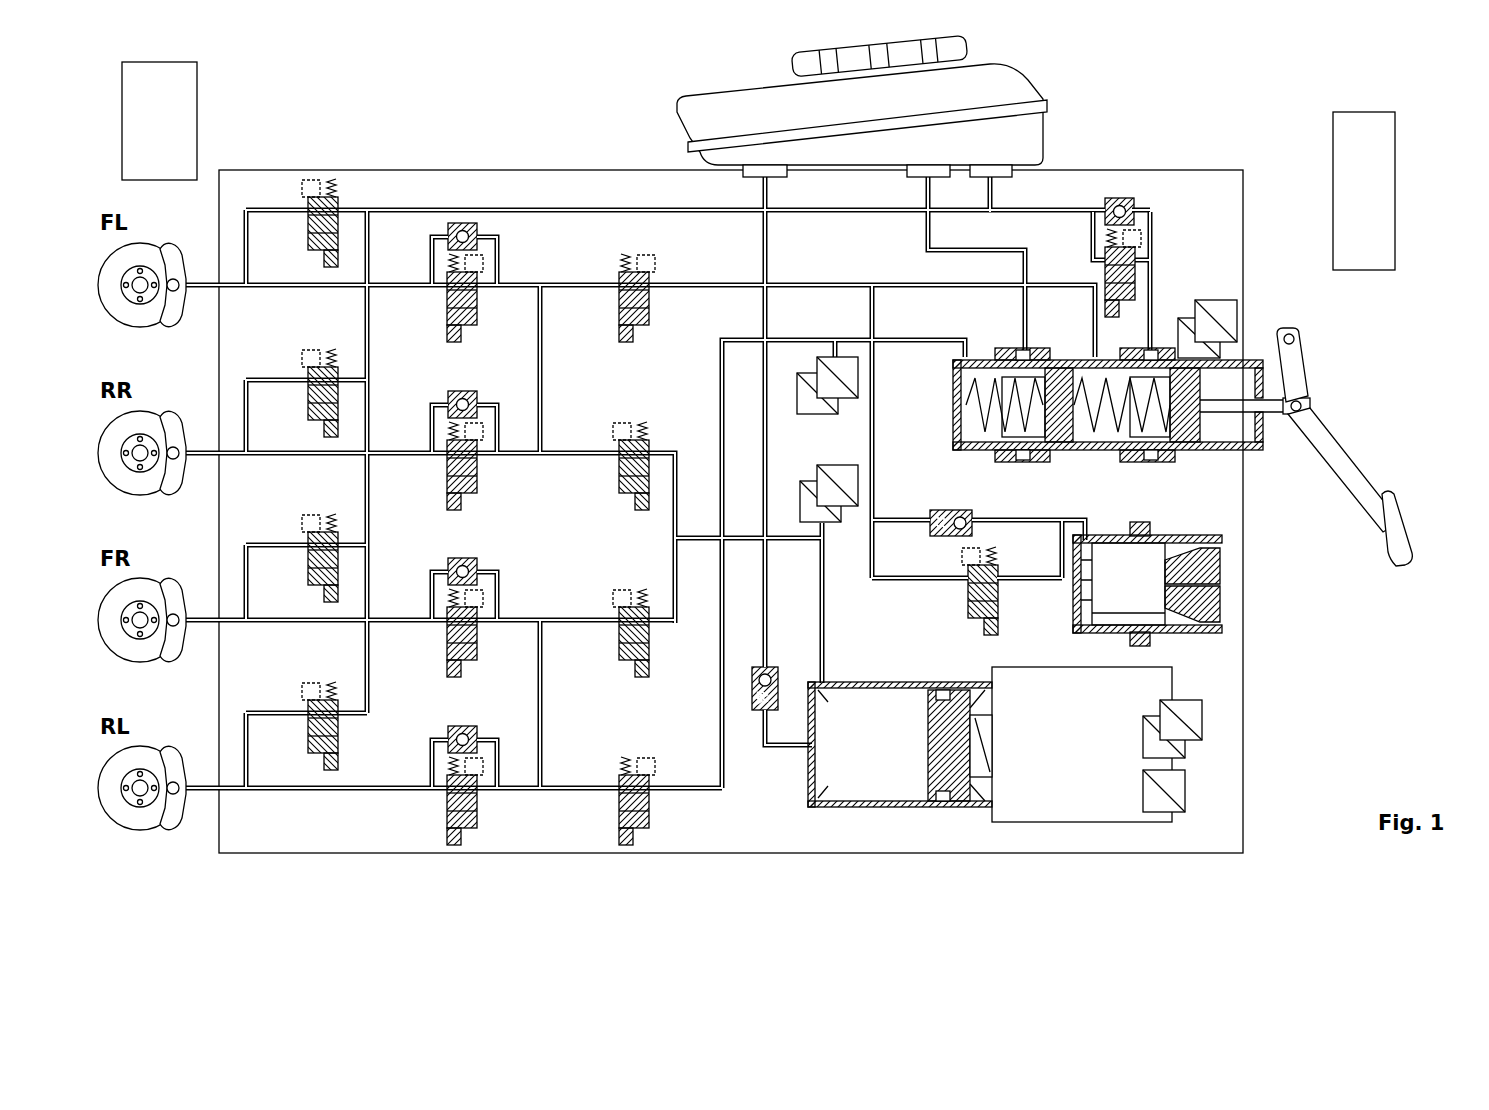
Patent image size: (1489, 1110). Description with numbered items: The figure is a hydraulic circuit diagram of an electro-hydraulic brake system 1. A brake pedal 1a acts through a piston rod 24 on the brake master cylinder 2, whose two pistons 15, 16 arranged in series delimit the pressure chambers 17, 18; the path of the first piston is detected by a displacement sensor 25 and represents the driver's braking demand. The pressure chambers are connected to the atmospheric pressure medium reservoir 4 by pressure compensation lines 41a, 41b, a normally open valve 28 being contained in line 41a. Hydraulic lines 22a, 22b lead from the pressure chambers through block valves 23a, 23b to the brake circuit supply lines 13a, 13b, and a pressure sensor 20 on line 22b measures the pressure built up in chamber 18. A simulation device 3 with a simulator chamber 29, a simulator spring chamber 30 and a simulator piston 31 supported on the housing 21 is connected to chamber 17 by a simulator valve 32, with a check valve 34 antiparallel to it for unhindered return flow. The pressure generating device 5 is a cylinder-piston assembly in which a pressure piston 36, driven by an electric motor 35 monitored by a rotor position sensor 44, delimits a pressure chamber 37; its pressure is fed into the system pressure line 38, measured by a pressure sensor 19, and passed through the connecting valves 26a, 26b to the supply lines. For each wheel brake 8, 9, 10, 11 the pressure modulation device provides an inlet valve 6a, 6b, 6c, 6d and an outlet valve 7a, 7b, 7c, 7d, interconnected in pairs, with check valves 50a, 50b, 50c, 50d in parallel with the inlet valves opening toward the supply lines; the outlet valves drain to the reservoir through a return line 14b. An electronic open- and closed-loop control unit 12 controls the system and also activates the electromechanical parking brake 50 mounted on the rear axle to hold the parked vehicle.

The electro-hydraulic brake system 1 is at (592, 120).
The brake pedal 1a is at (1342, 470).
The brake master cylinder 2 is at (1071, 430).
The simulation device 3 is at (1150, 583).
The pressure medium reservoir 4 is at (768, 100).
The pressure generating device 5 is at (1141, 771).
The inlet valve 6a is at (446, 305).
The inlet valve 6b is at (446, 473).
The inlet valve 6c is at (446, 640).
The inlet valve 6d is at (446, 808).
The outlet valve 7a is at (306, 230).
The outlet valve 7b is at (306, 400).
The outlet valve 7c is at (306, 565).
The outlet valve 7d is at (306, 733).
The wheel brake 8 is at (172, 310).
The wheel brake 9 is at (172, 478).
The wheel brake 10 is at (172, 645).
The wheel brake 11 is at (172, 813).
The electronic open- and closed-loop control unit 12 is at (197, 86).
The brake circuit supply line 13a is at (538, 372).
The brake circuit supply line 13b is at (538, 704).
The return line 14b is at (388, 208).
The first brake master cylinder piston 15 is at (1190, 444).
The second piston 16 is at (1068, 444).
The first pressure chamber 17 is at (1110, 444).
The second pressure chamber 18 is at (965, 372).
The pressure sensor 19 is at (836, 464).
The pressure sensor 20 is at (826, 356).
The housing 21 is at (1222, 598).
The hydraulic line 22a is at (740, 284).
The hydraulic line 22b is at (716, 343).
The block valve 23a is at (620, 312).
The block valve 23b is at (648, 802).
The piston rod 24 is at (1272, 418).
The displacement sensor 25 is at (1230, 302).
The connecting valve 26a is at (630, 500).
The connecting valve 26b is at (630, 668).
The normally open valve 28 is at (1103, 272).
The simulator chamber 29 is at (1090, 618).
The simulator spring chamber 30 is at (1222, 552).
The simulator piston 31 is at (1112, 628).
The simulator valve 32 is at (966, 598).
The check valve 34 is at (945, 537).
The electric motor 35 is at (1048, 785).
The pressure piston 36 is at (936, 803).
The pressure chamber 37 is at (900, 791).
The system pressure line 38 is at (748, 525).
The pressure compensation line 41a is at (1155, 285).
The pressure compensation line 41b is at (1022, 318).
The rotor position sensor 44 is at (1204, 726).
The parking brake 50 is at (1333, 146).
The check valve 50a is at (480, 236).
The check valve 50b is at (480, 404).
The check valve 50c is at (478, 568).
The check valve 50d is at (446, 738).